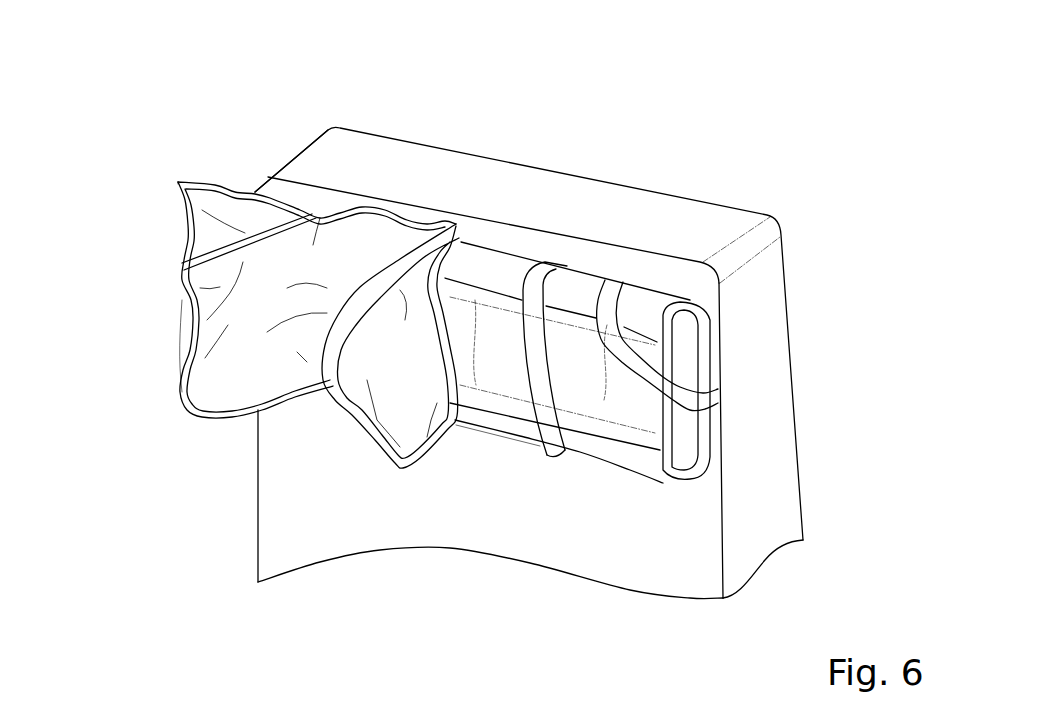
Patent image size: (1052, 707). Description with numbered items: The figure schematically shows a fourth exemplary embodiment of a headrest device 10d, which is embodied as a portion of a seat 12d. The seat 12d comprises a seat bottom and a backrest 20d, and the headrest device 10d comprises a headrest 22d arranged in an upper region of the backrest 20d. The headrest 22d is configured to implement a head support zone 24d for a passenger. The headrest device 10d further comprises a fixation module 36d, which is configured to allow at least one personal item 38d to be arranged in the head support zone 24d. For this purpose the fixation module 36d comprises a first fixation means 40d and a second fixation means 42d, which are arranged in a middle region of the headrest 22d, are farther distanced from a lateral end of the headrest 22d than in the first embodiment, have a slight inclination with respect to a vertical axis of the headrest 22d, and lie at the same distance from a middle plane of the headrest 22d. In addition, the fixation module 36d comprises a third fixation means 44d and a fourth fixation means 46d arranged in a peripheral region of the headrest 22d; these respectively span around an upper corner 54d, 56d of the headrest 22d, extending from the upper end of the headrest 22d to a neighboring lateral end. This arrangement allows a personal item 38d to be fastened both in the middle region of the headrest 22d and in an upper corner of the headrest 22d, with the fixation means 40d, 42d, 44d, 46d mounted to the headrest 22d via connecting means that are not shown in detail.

The headrest device 10d is at (169, 301).
The seat 12d is at (556, 143).
The backrest 20d is at (355, 487).
The headrest 22d is at (490, 272).
The head support zone 24d is at (500, 359).
The fixation module 36d is at (312, 174).
The personal item 38d is at (230, 353).
The first fixation means 40d is at (548, 265).
The second fixation means 42d is at (390, 285).
The third fixation means 44d is at (712, 401).
The fourth fixation means 46d is at (253, 253).
The upper corner 54d is at (707, 306).
The upper corner 56d is at (225, 178).